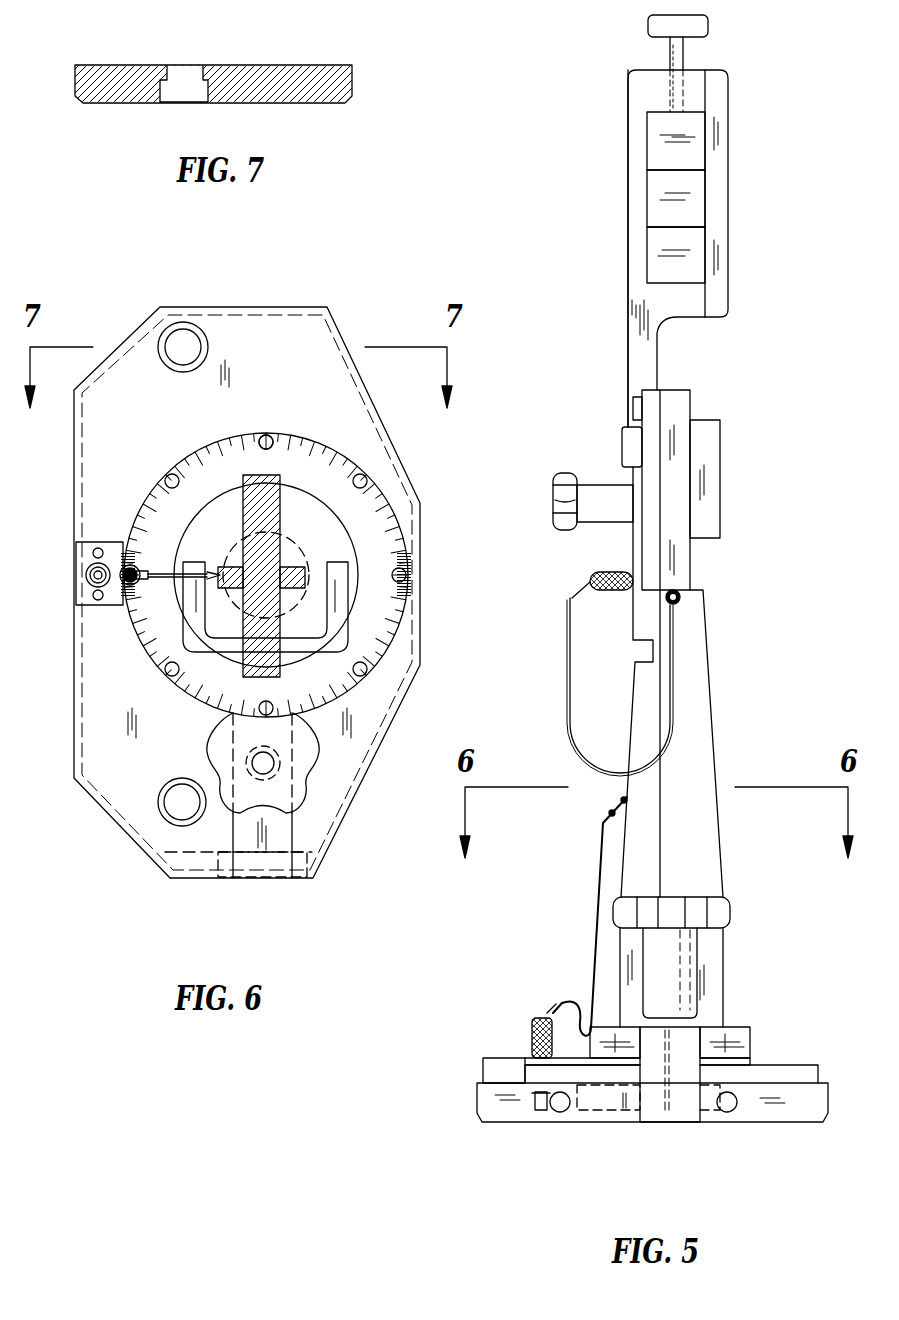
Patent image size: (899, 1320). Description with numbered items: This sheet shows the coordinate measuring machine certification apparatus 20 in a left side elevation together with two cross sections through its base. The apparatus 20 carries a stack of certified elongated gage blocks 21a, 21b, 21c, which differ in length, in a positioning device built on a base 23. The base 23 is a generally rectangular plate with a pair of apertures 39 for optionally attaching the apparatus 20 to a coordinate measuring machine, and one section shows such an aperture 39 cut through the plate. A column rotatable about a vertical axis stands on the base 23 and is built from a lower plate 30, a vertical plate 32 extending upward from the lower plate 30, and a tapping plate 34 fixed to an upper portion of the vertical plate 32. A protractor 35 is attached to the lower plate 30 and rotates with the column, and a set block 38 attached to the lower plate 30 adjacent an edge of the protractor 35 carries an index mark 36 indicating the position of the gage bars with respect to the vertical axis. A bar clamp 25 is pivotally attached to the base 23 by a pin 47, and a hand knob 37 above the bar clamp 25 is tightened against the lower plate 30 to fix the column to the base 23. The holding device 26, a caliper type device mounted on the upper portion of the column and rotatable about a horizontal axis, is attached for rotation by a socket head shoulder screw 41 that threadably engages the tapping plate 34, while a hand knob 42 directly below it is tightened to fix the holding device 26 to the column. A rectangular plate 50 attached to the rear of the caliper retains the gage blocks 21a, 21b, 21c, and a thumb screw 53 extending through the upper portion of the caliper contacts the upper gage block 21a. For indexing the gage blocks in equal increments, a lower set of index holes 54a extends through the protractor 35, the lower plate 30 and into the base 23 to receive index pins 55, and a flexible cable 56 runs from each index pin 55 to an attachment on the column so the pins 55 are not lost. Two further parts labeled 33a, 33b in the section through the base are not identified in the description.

In FIG. 5, the coordinate measuring machine certification apparatus 20 is at (415, 1005).
In FIG. 5, the upper gage block 21a is at (647, 138).
In FIG. 5, the gage block 21b is at (647, 193).
In FIG. 5, the gage block 21c is at (647, 250).
In FIG. 7, the base 23 is at (322, 103).
In FIG. 6, the base 23 is at (122, 830).
In FIG. 5, the base 23 is at (768, 1122).
In FIG. 6, the bar clamp 25 is at (348, 575).
In FIG. 5, the bar clamp 25 is at (733, 1027).
In FIG. 5, the holding device 26 is at (627, 337).
In FIG. 5, the lower plate 30 is at (818, 1072).
In FIG. 6, the vertical plate 32 is at (242, 478).
In FIG. 6, the left clamp jaw 33a is at (222, 572).
In FIG. 6, the right clamp jaw 33b is at (305, 573).
In FIG. 5, the tapping plate 34 is at (720, 488).
In FIG. 6, the protractor 35 is at (382, 680).
In FIG. 5, the protractor 35 is at (765, 1058).
In FIG. 6, the index mark 36 is at (122, 575).
In FIG. 6, the hand knob 37 is at (323, 777).
In FIG. 5, the hand knob 37 is at (725, 898).
In FIG. 6, the set block 38 is at (108, 605).
In FIG. 5, the set block 38 is at (502, 1058).
In FIG. 7, the apertures 39 is at (165, 66).
In FIG. 6, the apertures 39 is at (172, 322).
In FIG. 5, the socket head shoulder screw 41 is at (622, 448).
In FIG. 5, the hand knob 42 is at (562, 530).
In FIG. 6, the pin 47 is at (270, 880).
In FIG. 5, the pin 47 is at (660, 1113).
In FIG. 5, the plate 50 is at (727, 193).
In FIG. 5, the thumb screw 53 is at (648, 22).
In FIG. 6, the lower set of index holes 54a is at (267, 440).
In FIG. 5, the lower set of index holes 54a is at (537, 1090).
In FIG. 6, the index pins 55 is at (122, 590).
In FIG. 5, the index pins 55 is at (617, 590).
In FIG. 6, the flexible cable 56 is at (185, 565).
In FIG. 5, the flexible cable 56 is at (565, 692).